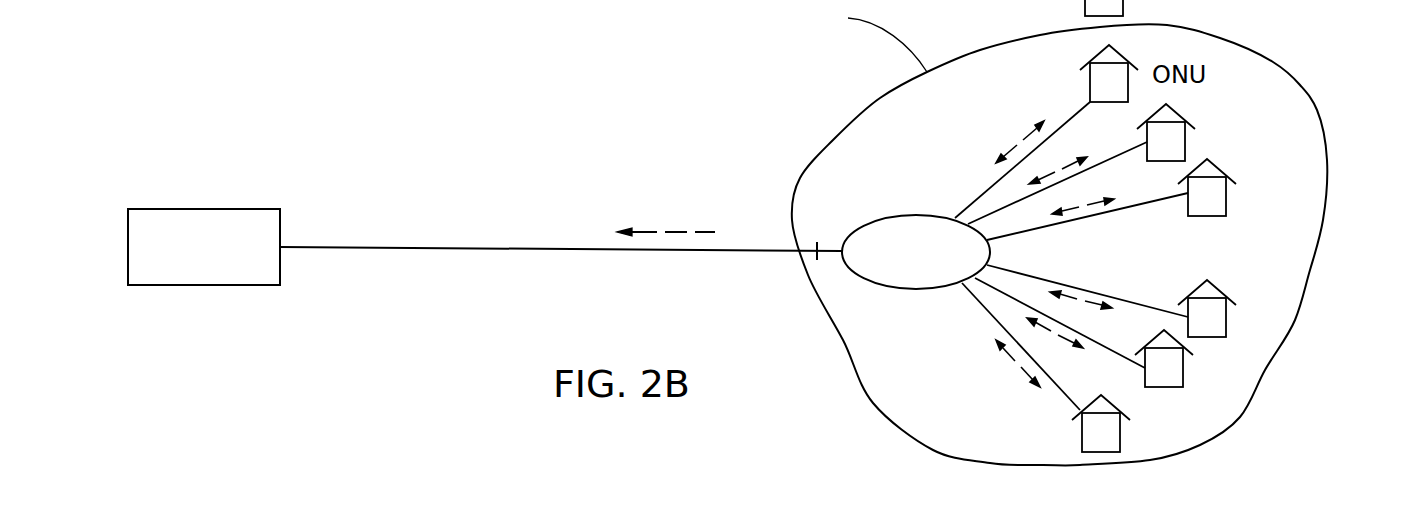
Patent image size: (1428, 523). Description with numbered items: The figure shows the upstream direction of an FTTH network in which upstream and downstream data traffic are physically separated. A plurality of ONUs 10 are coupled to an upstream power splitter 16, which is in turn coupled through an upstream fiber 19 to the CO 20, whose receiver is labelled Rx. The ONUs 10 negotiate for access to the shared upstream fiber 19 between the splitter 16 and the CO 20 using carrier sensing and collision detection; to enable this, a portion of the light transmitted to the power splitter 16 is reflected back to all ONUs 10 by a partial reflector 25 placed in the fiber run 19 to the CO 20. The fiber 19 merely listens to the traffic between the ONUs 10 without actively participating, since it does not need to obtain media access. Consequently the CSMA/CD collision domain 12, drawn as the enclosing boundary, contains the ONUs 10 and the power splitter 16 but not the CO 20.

The ONUs 10 is at (1190, 142).
The collision domain 12 is at (1316, 108).
The upstream power splitter 16 is at (880, 215).
The upstream fiber 19 is at (562, 249).
The CO 20 is at (249, 209).
The partial reflector 25 is at (816, 255).